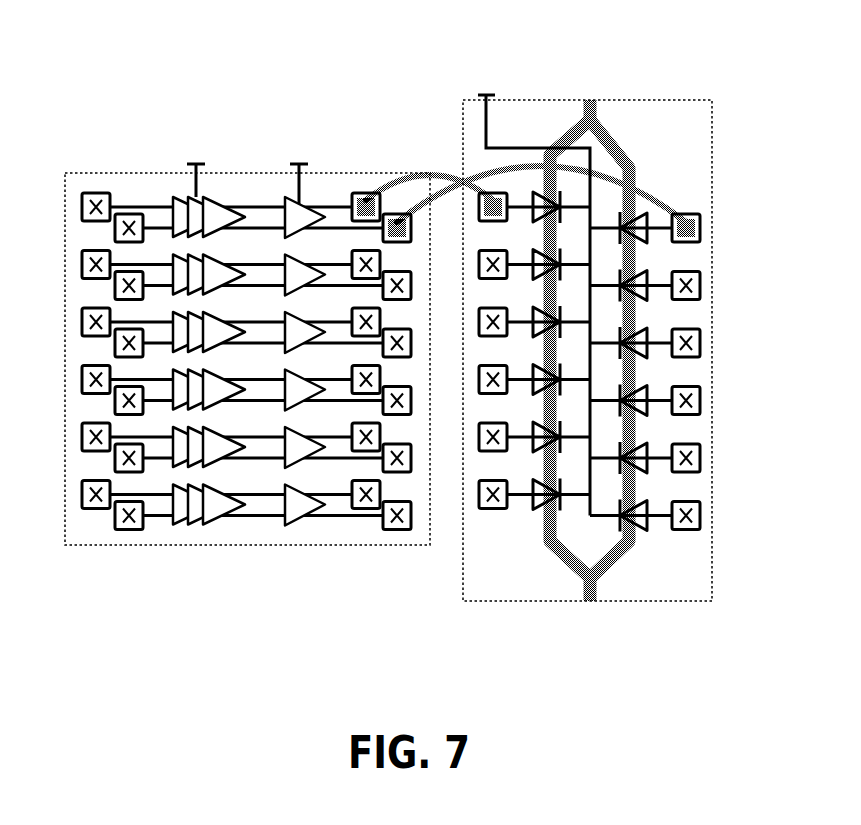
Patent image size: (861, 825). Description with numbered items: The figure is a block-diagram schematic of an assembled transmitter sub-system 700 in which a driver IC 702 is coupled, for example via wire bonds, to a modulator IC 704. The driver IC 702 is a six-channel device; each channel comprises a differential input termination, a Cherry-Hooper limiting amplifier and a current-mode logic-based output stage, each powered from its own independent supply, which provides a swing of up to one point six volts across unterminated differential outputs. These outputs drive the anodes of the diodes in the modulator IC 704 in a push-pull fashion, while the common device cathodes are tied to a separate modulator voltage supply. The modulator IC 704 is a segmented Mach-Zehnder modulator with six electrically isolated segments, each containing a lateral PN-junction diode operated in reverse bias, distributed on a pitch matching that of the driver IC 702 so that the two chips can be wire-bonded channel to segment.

The optical transmitter assembly 700 is at (116, 97).
The driver IC 702 is at (352, 172).
The modulator IC 704 is at (670, 100).